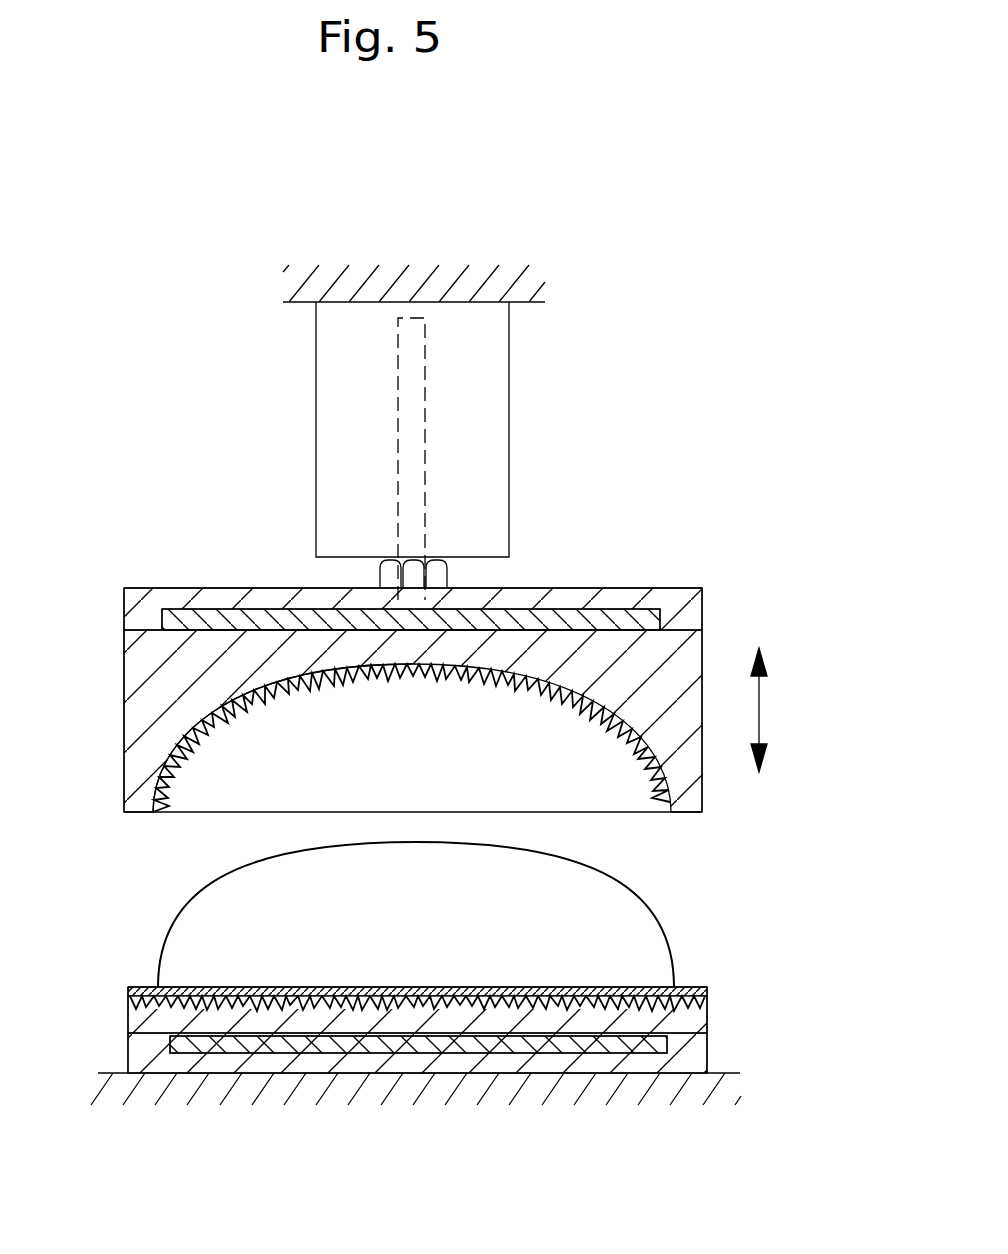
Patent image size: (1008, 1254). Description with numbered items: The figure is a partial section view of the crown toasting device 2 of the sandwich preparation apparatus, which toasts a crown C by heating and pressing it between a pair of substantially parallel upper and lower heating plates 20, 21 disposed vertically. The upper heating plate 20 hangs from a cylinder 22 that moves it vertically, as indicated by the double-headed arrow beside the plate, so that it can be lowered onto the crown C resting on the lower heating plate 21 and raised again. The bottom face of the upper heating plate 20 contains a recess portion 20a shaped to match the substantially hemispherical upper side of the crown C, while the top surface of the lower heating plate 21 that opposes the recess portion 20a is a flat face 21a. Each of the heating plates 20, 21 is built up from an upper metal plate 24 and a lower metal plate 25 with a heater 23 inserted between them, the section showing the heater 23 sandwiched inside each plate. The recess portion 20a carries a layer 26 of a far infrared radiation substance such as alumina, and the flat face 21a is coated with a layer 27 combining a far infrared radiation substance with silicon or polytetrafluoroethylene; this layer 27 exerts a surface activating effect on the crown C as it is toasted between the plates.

The crown toasting device 2 is at (687, 398).
The upper heating plate 20 is at (707, 563).
The recess portion 20a is at (603, 727).
The lower heating plate 21 is at (724, 1014).
The flat face 21a is at (680, 987).
The cylinder 22 is at (483, 377).
The heater 23 is at (655, 618).
The upper metal plate 24 is at (637, 590).
The lower metal plate 25 is at (677, 764).
The layer of far infrared radiation substance 26 is at (228, 703).
The layer 27 is at (135, 988).
The crown C is at (627, 938).